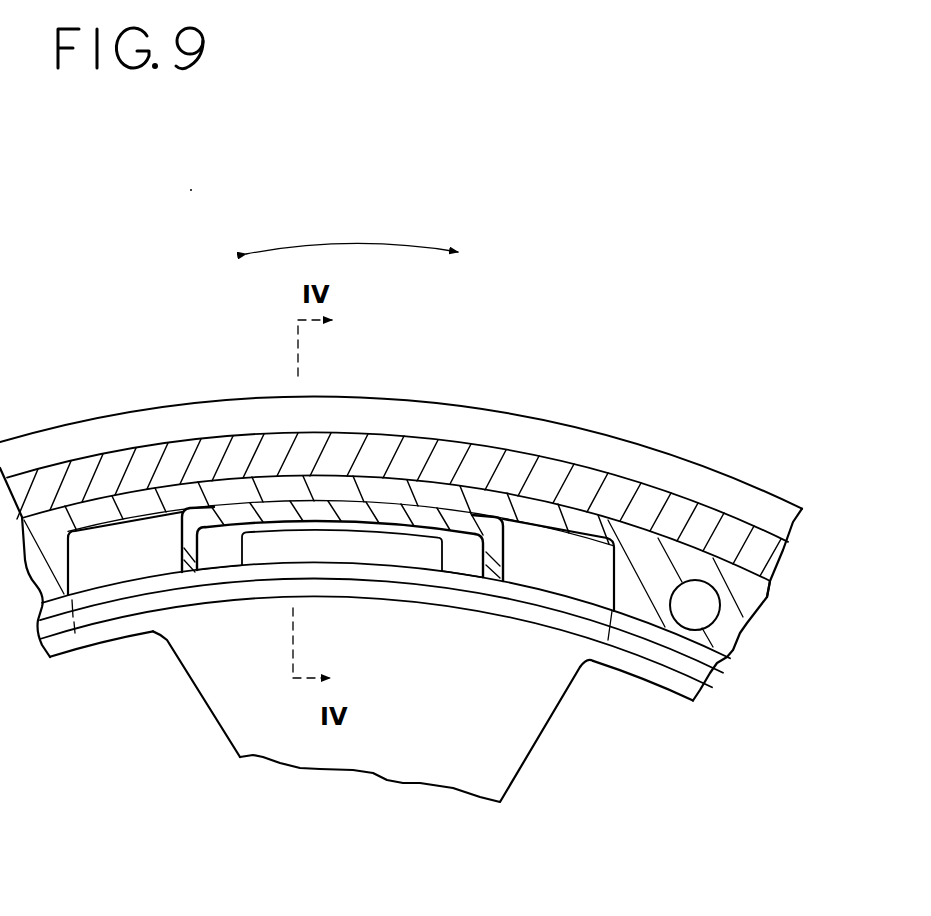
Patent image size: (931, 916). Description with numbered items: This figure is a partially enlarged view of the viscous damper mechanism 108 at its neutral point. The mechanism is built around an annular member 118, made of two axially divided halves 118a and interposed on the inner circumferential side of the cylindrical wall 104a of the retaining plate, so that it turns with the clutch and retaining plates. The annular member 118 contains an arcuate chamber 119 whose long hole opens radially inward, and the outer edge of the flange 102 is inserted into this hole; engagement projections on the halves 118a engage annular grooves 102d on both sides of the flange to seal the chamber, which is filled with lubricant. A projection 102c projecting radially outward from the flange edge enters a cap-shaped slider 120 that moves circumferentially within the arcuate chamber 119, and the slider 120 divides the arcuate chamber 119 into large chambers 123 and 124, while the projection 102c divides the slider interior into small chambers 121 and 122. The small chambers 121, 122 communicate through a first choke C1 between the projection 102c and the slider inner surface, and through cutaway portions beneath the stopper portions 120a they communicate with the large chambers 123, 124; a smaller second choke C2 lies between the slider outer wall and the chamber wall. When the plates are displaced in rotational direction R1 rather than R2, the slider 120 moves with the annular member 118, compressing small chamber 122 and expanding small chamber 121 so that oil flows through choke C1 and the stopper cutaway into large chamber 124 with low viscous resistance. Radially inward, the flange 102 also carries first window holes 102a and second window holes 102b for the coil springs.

The flange 102 is at (401, 662).
The first window hole 102a is at (217, 730).
The second window hole 102b is at (520, 780).
The projection 102c is at (403, 553).
The annular groove 102d is at (252, 587).
The cylindrical wall 104a is at (513, 467).
The viscous damper mechanism 108 is at (337, 455).
The annular member 118 is at (722, 487).
The half of the annular member 118a is at (737, 590).
The arcuate chamber 119 is at (155, 527).
The slider 120 is at (420, 517).
The stopper portion 120a is at (505, 550).
The small chamber 121 is at (220, 550).
The small chamber 122 is at (466, 556).
The large chamber 123 is at (150, 566).
The large chamber 124 is at (578, 578).
The first choke C1 is at (277, 513).
The second choke C2 is at (380, 498).
The rotational direction R1 is at (327, 262).
The rotational direction R2 is at (494, 266).